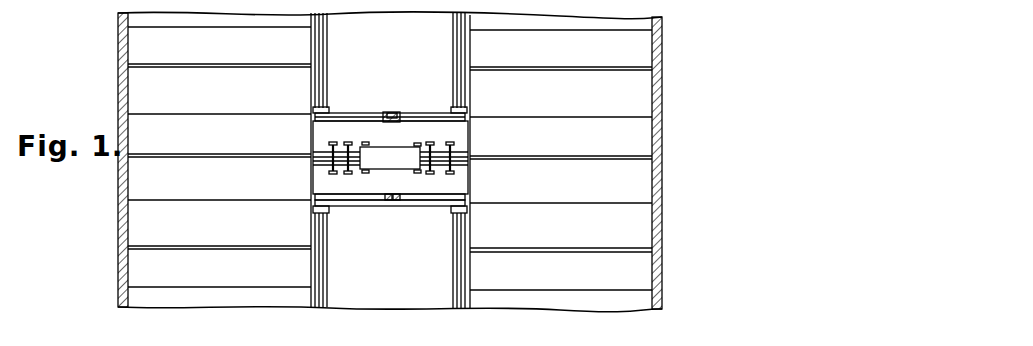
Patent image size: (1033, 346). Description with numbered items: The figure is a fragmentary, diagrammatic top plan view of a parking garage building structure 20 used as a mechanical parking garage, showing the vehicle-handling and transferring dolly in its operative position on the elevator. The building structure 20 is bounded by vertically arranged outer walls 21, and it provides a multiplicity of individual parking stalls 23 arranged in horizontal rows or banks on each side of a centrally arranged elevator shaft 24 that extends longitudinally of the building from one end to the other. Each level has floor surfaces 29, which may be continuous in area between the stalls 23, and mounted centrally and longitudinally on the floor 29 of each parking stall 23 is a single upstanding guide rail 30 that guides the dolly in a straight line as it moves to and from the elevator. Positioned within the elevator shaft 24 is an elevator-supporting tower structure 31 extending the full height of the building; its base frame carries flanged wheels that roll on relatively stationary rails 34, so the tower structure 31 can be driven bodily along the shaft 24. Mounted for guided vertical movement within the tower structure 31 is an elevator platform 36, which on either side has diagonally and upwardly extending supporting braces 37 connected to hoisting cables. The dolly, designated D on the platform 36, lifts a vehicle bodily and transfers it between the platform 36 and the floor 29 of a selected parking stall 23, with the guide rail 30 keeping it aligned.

The parking garage building structure 20 is at (680, 50).
The outer walls 21 is at (118, 305).
The parking stalls 23 is at (116, 27).
The elevator shaft 24 is at (396, 286).
The floor surfaces 29 is at (216, 101).
The guide rail 30 is at (257, 64).
The elevator-supporting tower structure 31 is at (450, 213).
The rails 34 is at (328, 40).
The elevator platform 36 is at (412, 130).
The supporting braces 37 is at (390, 113).